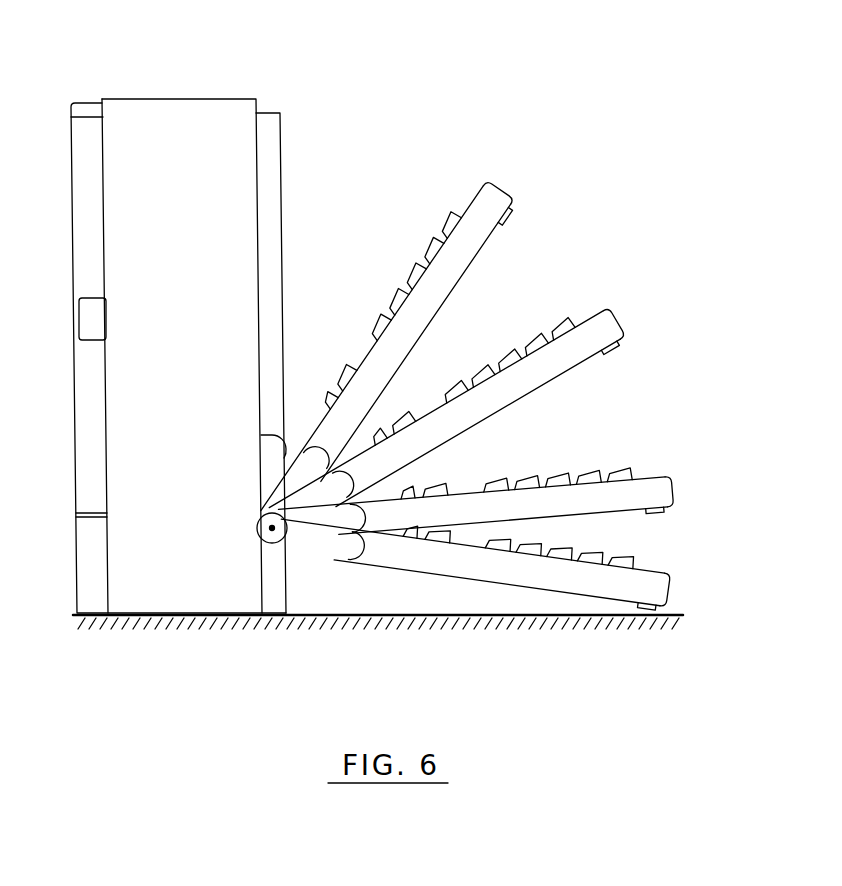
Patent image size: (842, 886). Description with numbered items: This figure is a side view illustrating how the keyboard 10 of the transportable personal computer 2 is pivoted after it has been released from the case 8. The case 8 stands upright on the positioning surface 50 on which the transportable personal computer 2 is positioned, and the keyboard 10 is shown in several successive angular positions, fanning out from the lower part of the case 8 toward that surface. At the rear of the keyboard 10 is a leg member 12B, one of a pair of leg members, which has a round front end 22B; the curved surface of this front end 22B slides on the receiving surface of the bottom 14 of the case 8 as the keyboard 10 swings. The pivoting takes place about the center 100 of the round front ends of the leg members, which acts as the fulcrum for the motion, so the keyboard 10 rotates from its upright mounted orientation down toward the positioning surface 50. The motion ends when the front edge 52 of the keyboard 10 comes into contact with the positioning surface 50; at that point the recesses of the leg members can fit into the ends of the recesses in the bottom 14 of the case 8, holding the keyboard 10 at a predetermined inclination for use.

The transportable personal computer 2 is at (90, 80).
The case 8 is at (188, 118).
The keyboard 10 is at (502, 198).
The leg member 12B is at (331, 551).
The bottom 14 is at (278, 597).
The round front end 22B is at (262, 541).
The positioning surface 50 is at (473, 620).
The front edge 52 is at (673, 597).
The center 100 is at (257, 528).